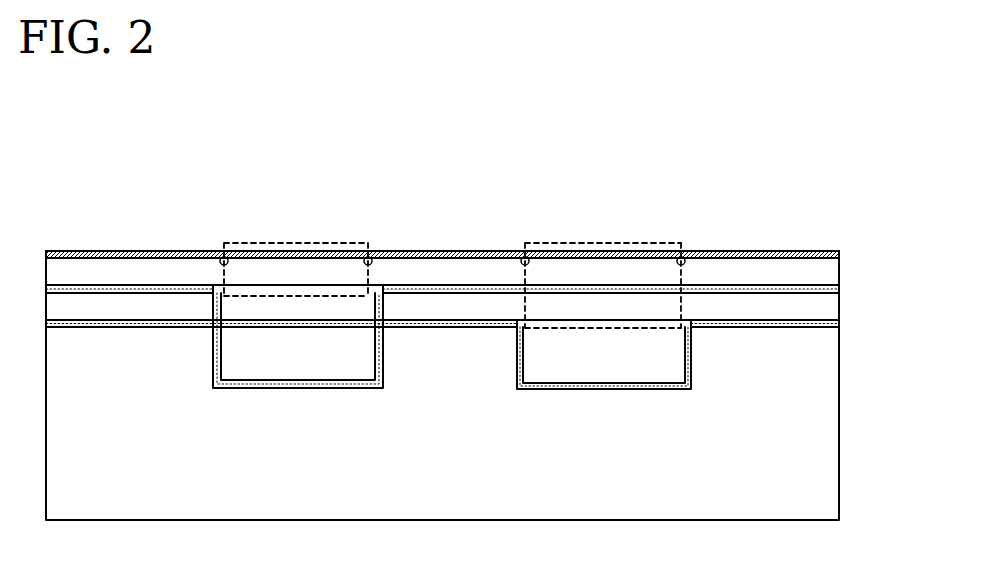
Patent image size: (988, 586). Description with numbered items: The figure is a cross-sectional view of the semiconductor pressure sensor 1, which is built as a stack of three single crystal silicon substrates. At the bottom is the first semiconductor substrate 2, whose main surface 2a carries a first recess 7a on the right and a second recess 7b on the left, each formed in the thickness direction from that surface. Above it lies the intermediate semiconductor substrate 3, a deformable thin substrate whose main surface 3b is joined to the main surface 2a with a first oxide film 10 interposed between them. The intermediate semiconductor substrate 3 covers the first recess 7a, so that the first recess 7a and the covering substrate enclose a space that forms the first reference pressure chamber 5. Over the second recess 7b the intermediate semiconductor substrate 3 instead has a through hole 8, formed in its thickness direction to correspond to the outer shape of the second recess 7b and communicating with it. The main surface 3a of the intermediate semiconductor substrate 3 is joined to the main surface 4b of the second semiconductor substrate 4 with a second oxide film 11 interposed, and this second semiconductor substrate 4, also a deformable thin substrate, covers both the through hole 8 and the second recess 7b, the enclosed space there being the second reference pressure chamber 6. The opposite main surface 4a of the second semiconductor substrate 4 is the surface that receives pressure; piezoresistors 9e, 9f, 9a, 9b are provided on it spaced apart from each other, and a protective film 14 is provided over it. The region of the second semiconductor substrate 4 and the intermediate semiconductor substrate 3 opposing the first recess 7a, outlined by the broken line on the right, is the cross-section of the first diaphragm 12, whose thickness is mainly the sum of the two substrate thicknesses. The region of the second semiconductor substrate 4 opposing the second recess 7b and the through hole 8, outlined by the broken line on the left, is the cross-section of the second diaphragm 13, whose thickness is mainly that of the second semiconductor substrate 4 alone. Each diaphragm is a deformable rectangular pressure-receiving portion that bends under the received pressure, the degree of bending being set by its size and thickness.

The semiconductor pressure sensor 1 is at (711, 154).
The first semiconductor substrate 2 is at (808, 428).
The main surface of the first semiconductor substrate 2a is at (815, 330).
The intermediate semiconductor substrate 3 is at (820, 308).
The main surface of the intermediate semiconductor substrate 3a is at (58, 295).
The main surface of the intermediate semiconductor substrate 3b is at (133, 322).
The second semiconductor substrate 4 is at (828, 273).
The main surface of the second semiconductor substrate 4a is at (73, 261).
The main surface of the second semiconductor substrate 4b is at (100, 283).
The first reference pressure chamber 5 is at (613, 352).
The second reference pressure chamber 6 is at (335, 348).
The first recess 7a is at (693, 353).
The second recess 7b is at (384, 353).
The through hole 8 is at (214, 309).
The piezoresistor 9a is at (526, 256).
The piezoresistor 9b is at (681, 256).
The piezoresistor 9e is at (226, 256).
The piezoresistor 9f is at (366, 256).
The first oxide film 10 is at (780, 323).
The second oxide film 11 is at (748, 290).
The first diaphragm 12 is at (562, 330).
The second diaphragm 13 is at (272, 296).
The protective film 14 is at (823, 250).